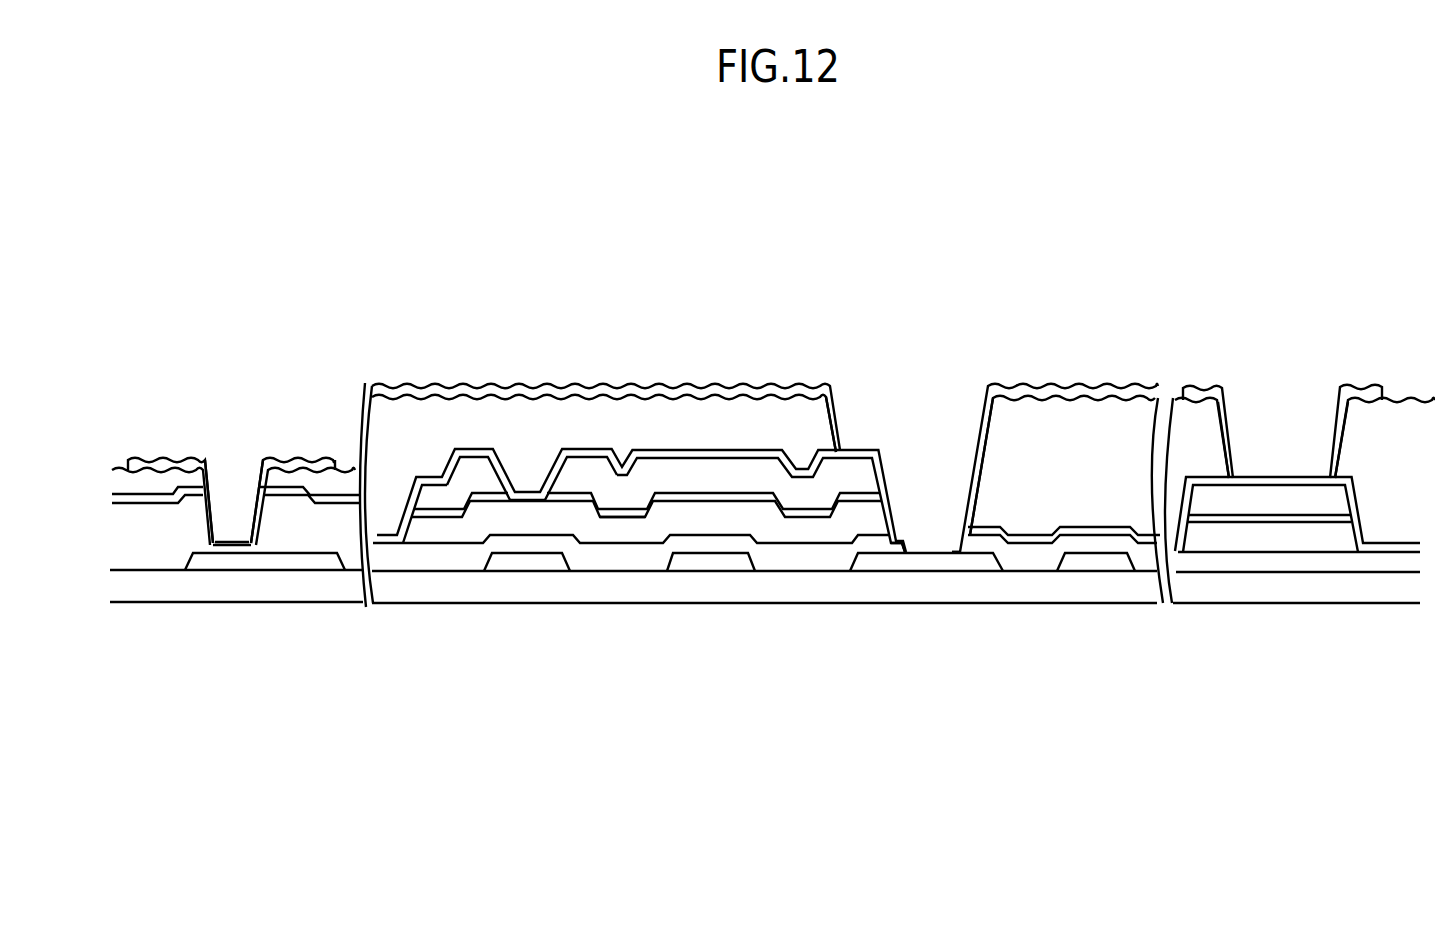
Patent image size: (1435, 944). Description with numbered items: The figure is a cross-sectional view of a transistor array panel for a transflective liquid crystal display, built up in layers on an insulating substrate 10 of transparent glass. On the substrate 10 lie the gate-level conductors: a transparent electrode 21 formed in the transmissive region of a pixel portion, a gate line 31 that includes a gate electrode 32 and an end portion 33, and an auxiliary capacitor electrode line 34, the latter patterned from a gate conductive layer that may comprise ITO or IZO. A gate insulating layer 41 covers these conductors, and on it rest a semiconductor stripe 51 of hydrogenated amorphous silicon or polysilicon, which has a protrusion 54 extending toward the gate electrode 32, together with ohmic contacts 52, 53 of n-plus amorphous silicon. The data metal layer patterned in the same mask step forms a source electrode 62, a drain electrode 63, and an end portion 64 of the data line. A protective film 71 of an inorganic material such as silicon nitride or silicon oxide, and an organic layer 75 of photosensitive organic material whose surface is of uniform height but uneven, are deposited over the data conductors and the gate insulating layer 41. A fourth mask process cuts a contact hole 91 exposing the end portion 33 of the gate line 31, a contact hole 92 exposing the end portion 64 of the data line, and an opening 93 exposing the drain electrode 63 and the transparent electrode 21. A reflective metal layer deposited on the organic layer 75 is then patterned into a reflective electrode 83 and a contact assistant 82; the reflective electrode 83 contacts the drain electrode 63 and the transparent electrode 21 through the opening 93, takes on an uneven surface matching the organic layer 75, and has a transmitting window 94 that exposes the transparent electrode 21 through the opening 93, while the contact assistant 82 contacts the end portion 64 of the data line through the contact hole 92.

The insulating substrate 10 is at (842, 593).
The transparent electrode 21 is at (952, 567).
The gate line 31 is at (1108, 565).
The gate electrode 32 is at (512, 563).
The end portion of gate line 33 is at (240, 563).
The auxiliary capacitor electrode line 34 is at (712, 563).
The gate insulating layer 41 is at (170, 543).
The semiconductor stripe 51 is at (465, 533).
The ohmic contact 52 is at (440, 518).
The ohmic contact 53 is at (618, 513).
The protrusion 54 is at (550, 523).
The source electrode 62 is at (478, 472).
The drain electrode 63 is at (582, 472).
The end portion of data line 64 is at (1252, 503).
The protective film 71 is at (137, 498).
The organic layer 75 is at (410, 412).
The contact assistant 82 is at (1198, 390).
The reflective electrode 83 is at (531, 400).
The contact hole 91 is at (236, 487).
The contact hole 92 is at (1303, 414).
The opening 93 is at (914, 414).
The transmitting window 94 is at (902, 553).